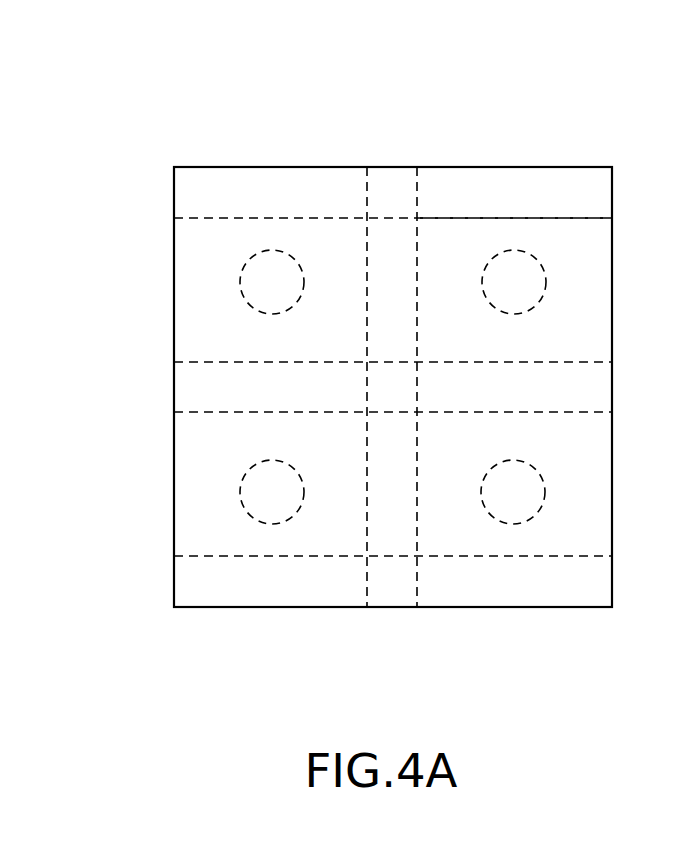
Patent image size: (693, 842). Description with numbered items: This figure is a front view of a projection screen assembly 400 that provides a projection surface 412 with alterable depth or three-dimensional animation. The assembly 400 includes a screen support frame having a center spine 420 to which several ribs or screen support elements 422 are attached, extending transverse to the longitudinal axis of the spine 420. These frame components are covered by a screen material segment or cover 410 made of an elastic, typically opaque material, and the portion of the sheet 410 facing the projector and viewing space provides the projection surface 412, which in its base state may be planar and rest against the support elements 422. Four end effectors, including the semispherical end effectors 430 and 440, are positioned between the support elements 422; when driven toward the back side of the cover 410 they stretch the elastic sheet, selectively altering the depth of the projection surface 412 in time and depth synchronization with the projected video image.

The projection screen assembly 400 is at (195, 133).
The screen material segment or cover 410 is at (547, 169).
The projection surface 412 is at (585, 207).
The center spine 420 is at (367, 179).
The screen support elements 422 is at (196, 218).
The end effector 430 is at (228, 517).
The end effector 440 is at (513, 537).